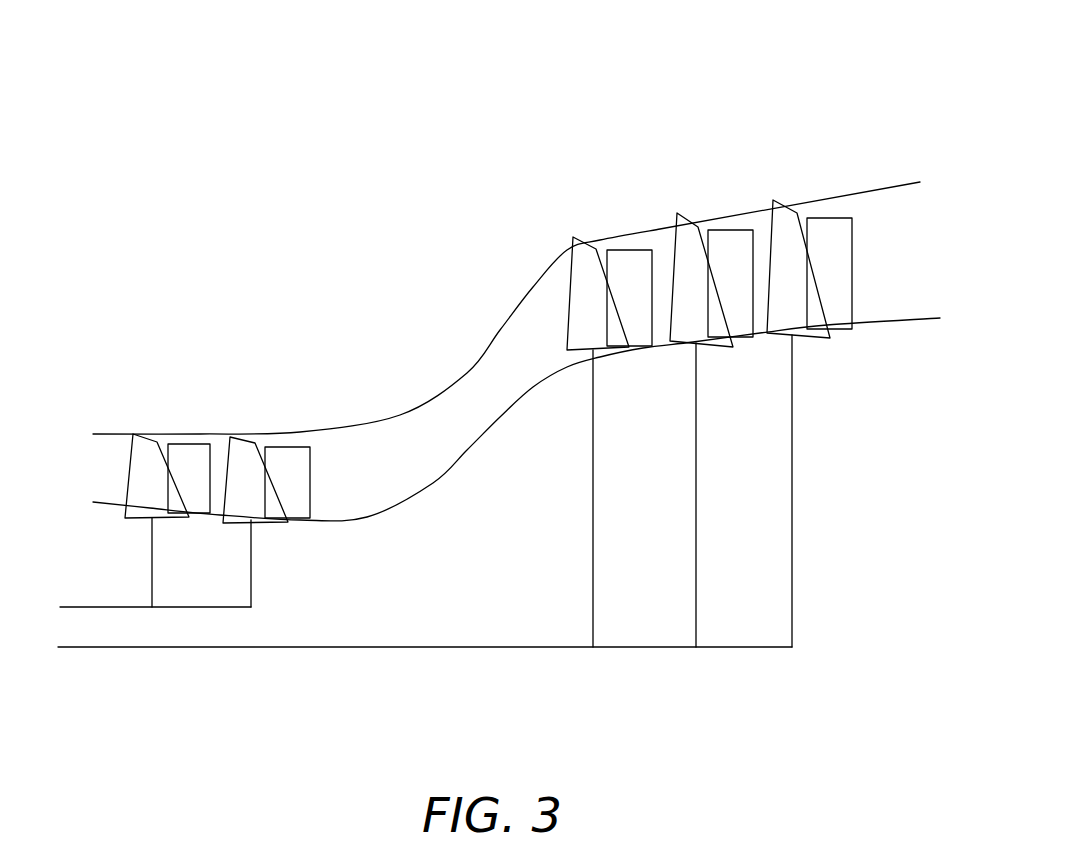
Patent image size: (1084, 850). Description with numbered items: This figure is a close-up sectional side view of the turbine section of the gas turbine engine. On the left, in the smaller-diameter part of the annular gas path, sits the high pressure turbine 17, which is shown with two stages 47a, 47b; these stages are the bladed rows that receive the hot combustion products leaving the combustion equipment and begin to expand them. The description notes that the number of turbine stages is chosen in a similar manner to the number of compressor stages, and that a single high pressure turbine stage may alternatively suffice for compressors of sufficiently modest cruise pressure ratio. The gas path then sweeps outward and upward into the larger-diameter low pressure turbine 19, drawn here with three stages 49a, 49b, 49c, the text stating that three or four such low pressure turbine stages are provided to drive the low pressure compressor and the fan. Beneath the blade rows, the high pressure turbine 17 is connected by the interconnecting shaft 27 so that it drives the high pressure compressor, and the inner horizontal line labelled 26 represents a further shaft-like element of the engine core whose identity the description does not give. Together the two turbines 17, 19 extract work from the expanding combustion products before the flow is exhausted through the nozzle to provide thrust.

The high pressure turbine 17 is at (205, 267).
The low pressure turbine 19 is at (750, 149).
The inner shaft 26 is at (108, 608).
The interconnecting shaft 27 is at (345, 648).
The first high pressure turbine stage 47a is at (165, 433).
The second high pressure turbine stage 47b is at (272, 433).
The first low pressure turbine stage 49a is at (590, 243).
The second low pressure turbine stage 49b is at (692, 220).
The third low pressure turbine stage 49c is at (828, 217).